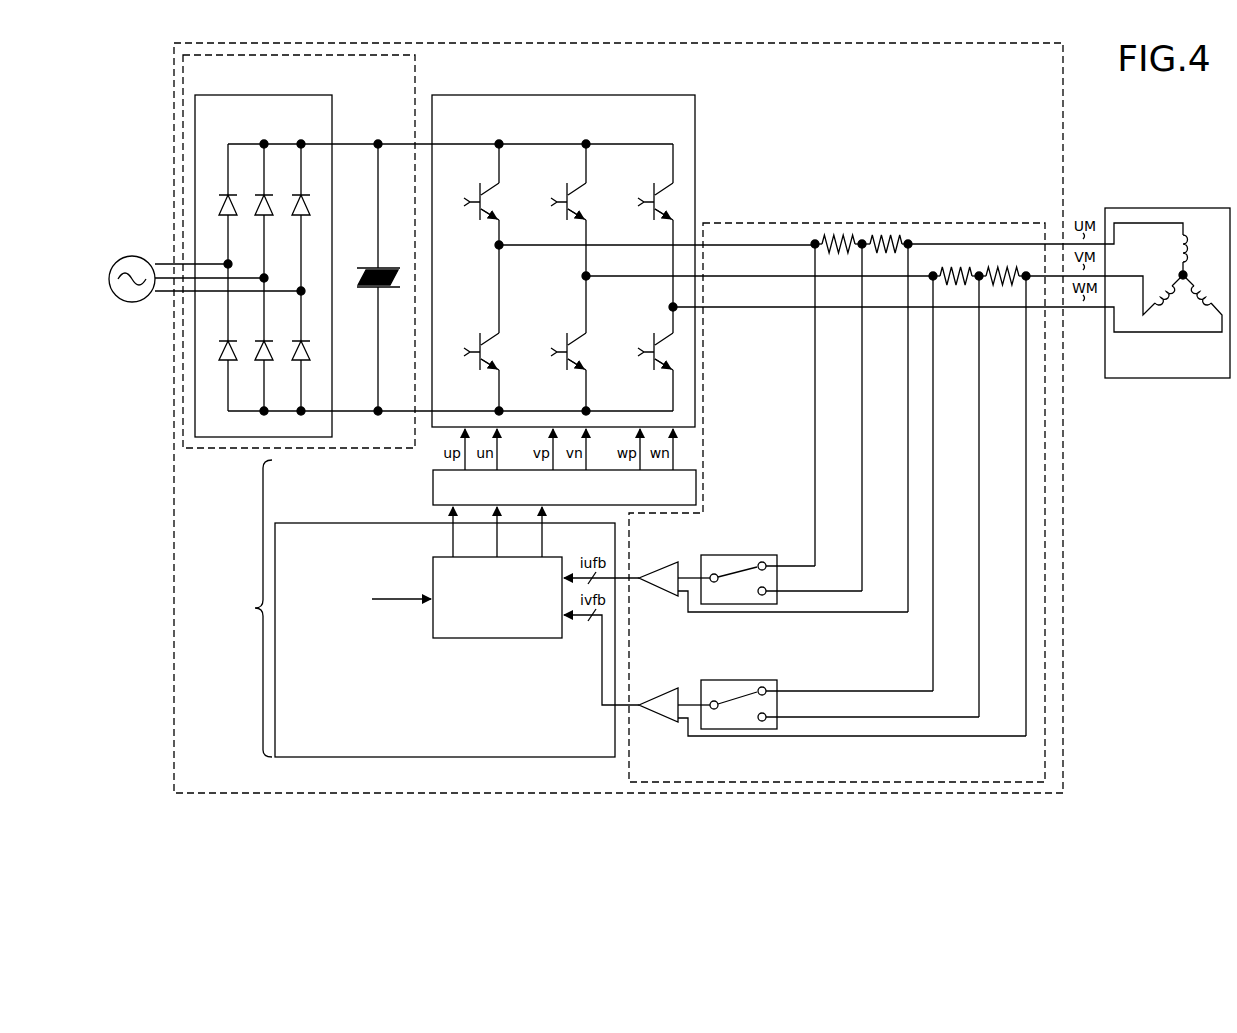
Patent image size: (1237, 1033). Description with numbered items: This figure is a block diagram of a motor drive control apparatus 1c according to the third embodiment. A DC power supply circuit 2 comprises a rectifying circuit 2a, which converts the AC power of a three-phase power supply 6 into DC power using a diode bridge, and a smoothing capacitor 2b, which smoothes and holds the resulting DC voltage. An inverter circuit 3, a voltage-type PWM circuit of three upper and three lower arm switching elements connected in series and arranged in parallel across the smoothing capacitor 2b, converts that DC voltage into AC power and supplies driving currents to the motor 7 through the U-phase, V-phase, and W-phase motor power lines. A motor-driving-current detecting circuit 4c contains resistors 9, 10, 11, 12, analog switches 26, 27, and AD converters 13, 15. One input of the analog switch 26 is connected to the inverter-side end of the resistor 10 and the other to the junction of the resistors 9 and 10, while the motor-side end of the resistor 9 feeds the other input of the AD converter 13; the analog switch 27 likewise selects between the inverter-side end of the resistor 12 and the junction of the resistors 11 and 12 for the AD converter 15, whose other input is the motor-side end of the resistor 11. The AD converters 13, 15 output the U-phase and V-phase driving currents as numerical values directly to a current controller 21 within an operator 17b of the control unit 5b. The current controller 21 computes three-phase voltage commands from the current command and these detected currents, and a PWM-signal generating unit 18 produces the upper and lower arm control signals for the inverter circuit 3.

The motor drive control apparatus 1c is at (174, 768).
The DC power supply circuit 2 is at (415, 76).
The rectifying circuit 2a is at (332, 112).
The smoothing capacitor 2b is at (370, 268).
The inverter circuit 3 is at (695, 112).
The motor-driving-current detecting circuit 4c is at (629, 768).
The control unit 5b is at (231, 608).
The power supply 6 is at (138, 257).
The motor 7 is at (1190, 208).
The resistor 9 is at (884, 235).
The resistor 10 is at (840, 235).
The resistor 11 is at (1001, 267).
The resistor 12 is at (956, 267).
The AD converter 13 is at (668, 568).
The AD converter 15 is at (668, 691).
The operator 17b is at (308, 523).
The PWM-signal generating unit 18 is at (433, 488).
The current controller 21 is at (508, 638).
The analog switch 26 is at (771, 555).
The analog switch 27 is at (778, 680).